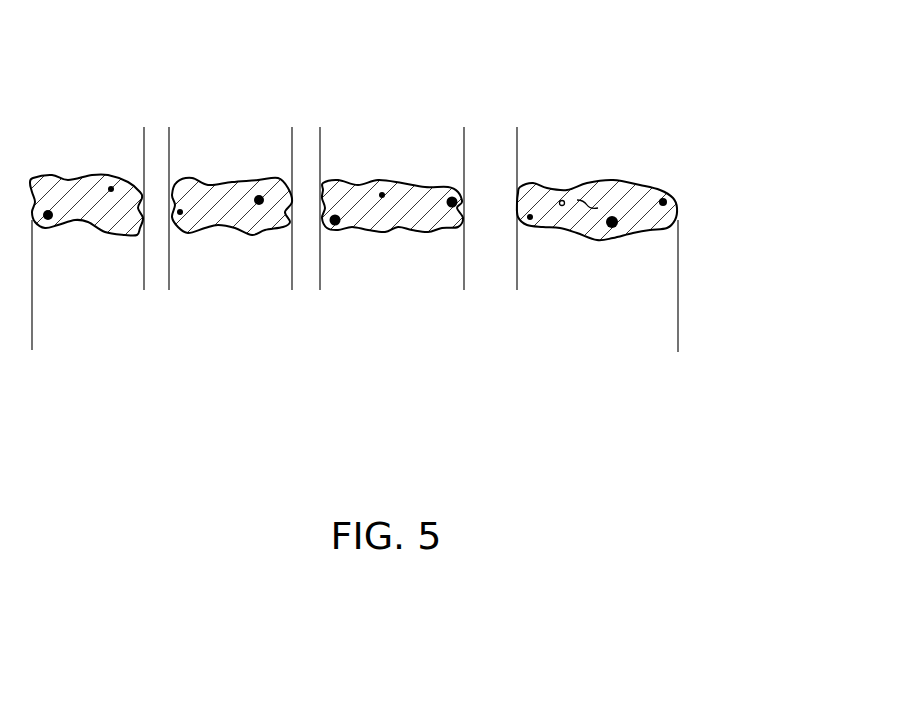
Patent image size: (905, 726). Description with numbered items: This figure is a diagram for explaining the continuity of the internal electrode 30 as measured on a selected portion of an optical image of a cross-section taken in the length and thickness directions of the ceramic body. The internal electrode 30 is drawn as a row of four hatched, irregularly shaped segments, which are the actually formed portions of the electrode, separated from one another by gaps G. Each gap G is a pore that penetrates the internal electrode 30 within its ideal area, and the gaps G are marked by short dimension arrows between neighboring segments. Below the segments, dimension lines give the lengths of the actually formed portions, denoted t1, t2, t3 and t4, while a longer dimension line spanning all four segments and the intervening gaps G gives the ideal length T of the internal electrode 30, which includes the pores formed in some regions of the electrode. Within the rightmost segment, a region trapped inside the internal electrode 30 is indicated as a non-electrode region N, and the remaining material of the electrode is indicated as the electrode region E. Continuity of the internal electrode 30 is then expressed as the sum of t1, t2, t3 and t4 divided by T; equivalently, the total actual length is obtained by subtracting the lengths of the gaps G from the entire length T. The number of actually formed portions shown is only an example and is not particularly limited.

The internal electrode 30 is at (677, 208).
The electrode region E is at (595, 200).
The non-electrode region N is at (663, 202).
The gap G is at (98, 138).
The length of first actually formed portion of internal electrode t1 is at (32, 274).
The length of second actually formed portion of internal electrode t2 is at (169, 274).
The length of third actually formed portion of internal electrode t3 is at (320, 274).
The length of fourth actually formed portion of internal electrode t4 is at (517, 274).
The ideal length of internal electrode T is at (666, 333).